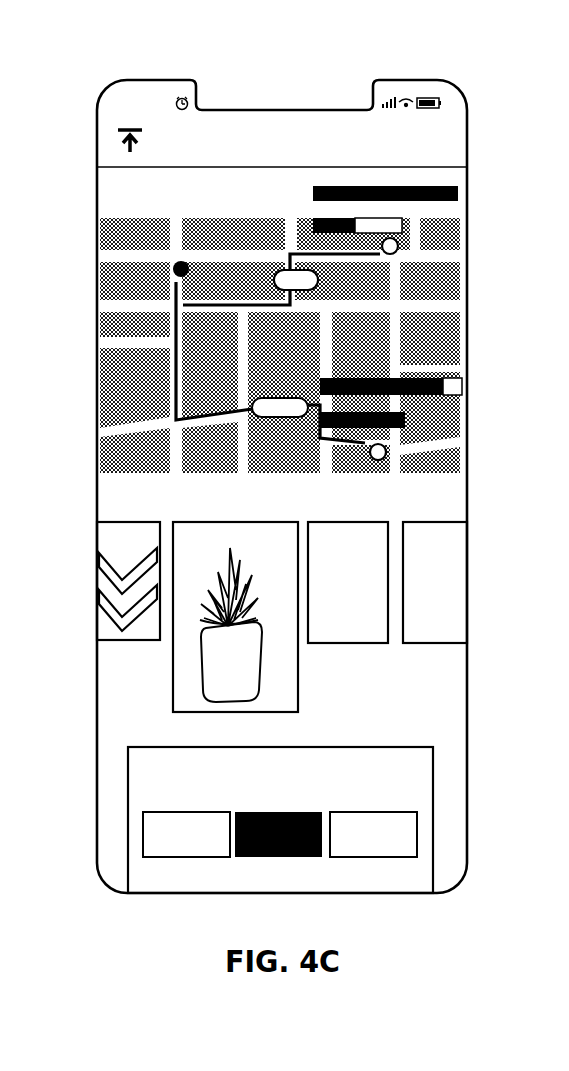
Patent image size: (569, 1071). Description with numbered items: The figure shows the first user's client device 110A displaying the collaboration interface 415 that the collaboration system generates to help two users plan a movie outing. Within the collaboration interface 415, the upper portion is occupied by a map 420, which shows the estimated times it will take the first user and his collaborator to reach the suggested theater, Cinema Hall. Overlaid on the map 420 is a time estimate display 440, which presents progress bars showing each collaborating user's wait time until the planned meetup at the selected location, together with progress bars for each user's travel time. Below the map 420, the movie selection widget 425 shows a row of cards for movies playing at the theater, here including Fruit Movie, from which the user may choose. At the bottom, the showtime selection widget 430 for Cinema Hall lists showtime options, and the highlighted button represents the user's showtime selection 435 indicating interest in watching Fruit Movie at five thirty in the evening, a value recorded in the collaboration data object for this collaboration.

The first client device 110A is at (460, 94).
The collaboration interface 415 is at (112, 210).
The map 420 is at (458, 333).
The movie selection widget 425 is at (455, 572).
The showtime selection widget 430 is at (128, 762).
The showtime selection 435 is at (298, 811).
The time estimate display 440 is at (458, 201).